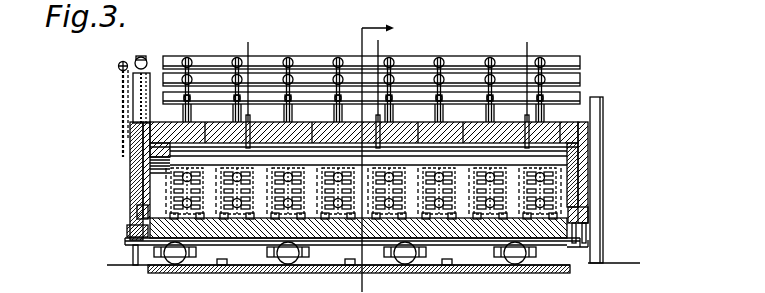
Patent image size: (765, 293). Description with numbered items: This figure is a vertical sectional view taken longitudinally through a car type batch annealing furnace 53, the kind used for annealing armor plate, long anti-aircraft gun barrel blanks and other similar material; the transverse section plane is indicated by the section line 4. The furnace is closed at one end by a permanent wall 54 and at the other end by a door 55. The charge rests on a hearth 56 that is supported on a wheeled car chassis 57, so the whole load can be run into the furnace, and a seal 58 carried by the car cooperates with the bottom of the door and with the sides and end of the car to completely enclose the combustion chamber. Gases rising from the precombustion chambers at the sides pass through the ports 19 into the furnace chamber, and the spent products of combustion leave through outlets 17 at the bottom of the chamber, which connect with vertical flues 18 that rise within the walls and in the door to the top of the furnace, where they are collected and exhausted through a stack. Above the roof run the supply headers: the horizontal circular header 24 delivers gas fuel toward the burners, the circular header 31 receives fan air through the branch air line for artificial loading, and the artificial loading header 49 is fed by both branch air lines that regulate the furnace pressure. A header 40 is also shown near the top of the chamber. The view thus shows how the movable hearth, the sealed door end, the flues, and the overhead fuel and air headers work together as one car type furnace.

The section line 4- 4 is at (384, 155).
The outlets 17 is at (147, 214).
The vertical flues 18 is at (467, 120).
The ports 19 is at (242, 172).
The horizontal circular header 24 is at (300, 97).
The circular header 31 is at (456, 78).
The header pipe 40 is at (375, 151).
The artificial loading header 49 is at (399, 63).
The car type batch annealing furnace 53 is at (150, 134).
The permanent wall 54 is at (593, 163).
The door 55 is at (130, 188).
The hearth 56 is at (258, 225).
The car chassis 57 is at (342, 245).
The seal 58 is at (128, 231).